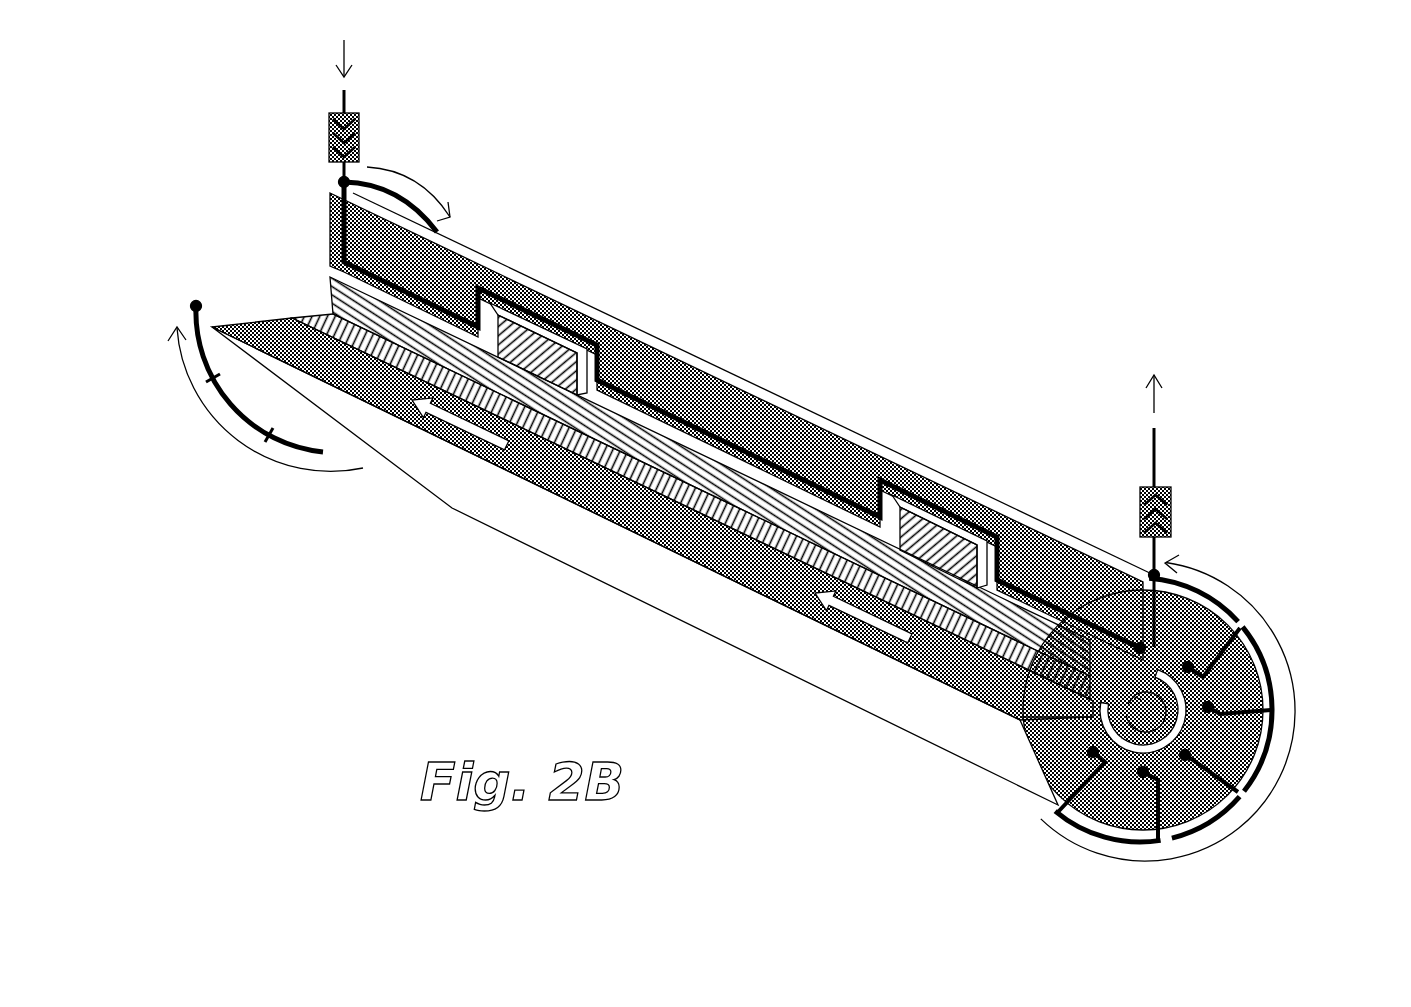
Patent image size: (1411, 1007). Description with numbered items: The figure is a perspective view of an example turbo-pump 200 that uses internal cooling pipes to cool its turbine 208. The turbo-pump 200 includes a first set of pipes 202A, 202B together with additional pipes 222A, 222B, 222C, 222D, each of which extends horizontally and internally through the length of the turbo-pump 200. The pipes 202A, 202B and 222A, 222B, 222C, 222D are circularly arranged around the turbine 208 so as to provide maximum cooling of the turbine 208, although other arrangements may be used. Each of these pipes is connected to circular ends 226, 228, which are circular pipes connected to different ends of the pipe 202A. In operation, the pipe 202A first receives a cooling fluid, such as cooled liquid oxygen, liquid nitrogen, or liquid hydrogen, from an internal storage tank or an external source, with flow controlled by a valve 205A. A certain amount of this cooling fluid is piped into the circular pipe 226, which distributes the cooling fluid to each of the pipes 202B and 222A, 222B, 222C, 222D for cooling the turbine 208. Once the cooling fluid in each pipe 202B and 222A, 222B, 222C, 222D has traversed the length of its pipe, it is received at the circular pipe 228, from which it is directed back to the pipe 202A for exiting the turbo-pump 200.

The turbo-pump 200 is at (708, 372).
The pipe 202A is at (1152, 462).
The pipe 202B is at (1057, 815).
The valve 205A is at (360, 150).
The turbine 208 is at (1152, 848).
The additional pipe 222A is at (1238, 628).
The additional pipe 222B is at (1283, 682).
The additional pipe 222C is at (1256, 786).
The additional pipe 222D is at (1182, 842).
The circular end 226 is at (215, 396).
The circular end 228 is at (1283, 650).